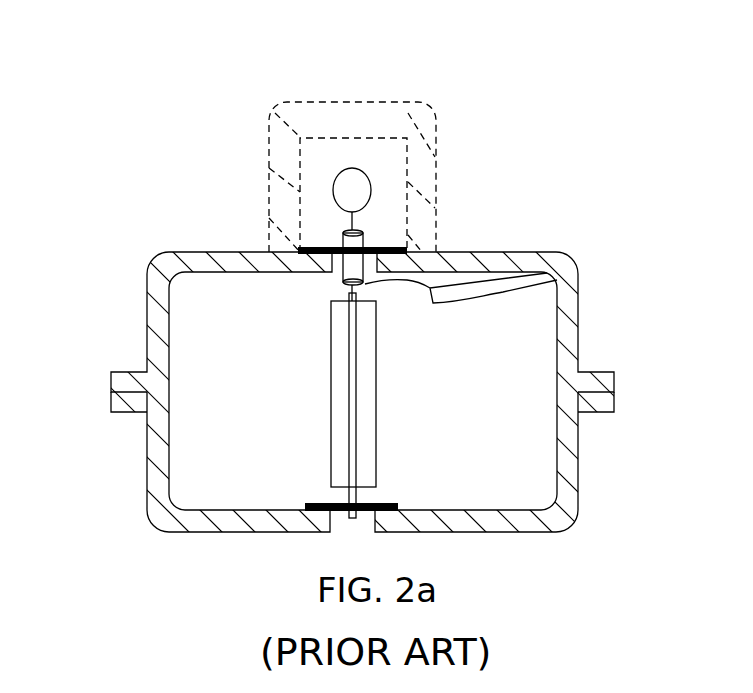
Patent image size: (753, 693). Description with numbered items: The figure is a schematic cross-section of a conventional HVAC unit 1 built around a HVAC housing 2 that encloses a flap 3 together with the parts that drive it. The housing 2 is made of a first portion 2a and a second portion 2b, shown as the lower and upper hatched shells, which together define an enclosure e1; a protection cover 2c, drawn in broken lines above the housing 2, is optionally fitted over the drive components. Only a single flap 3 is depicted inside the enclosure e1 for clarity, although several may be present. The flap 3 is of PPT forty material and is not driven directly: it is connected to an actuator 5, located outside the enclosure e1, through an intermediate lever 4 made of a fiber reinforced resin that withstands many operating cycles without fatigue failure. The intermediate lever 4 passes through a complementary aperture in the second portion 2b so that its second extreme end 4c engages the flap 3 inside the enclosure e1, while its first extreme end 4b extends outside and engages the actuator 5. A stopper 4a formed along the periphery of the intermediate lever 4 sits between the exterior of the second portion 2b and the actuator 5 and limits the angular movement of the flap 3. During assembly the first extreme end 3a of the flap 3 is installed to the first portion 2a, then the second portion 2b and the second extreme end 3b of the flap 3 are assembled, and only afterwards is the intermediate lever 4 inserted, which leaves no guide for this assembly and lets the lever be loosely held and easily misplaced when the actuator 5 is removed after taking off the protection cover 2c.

The HVAC unit 1 is at (552, 118).
The HVAC housing 2 is at (376, 346).
The first portion 2a is at (162, 453).
The second portion 2b is at (162, 288).
The protection cover 2c is at (410, 114).
The flap 3 is at (338, 352).
The first extreme end 3a is at (330, 490).
The second extreme end 3b is at (353, 295).
The intermediate lever 4 is at (363, 235).
The stopper 4a is at (303, 247).
The first extreme end 4b is at (352, 228).
The second extreme end 4c is at (355, 288).
The actuator 5 is at (362, 192).
The enclosure e1 is at (518, 475).